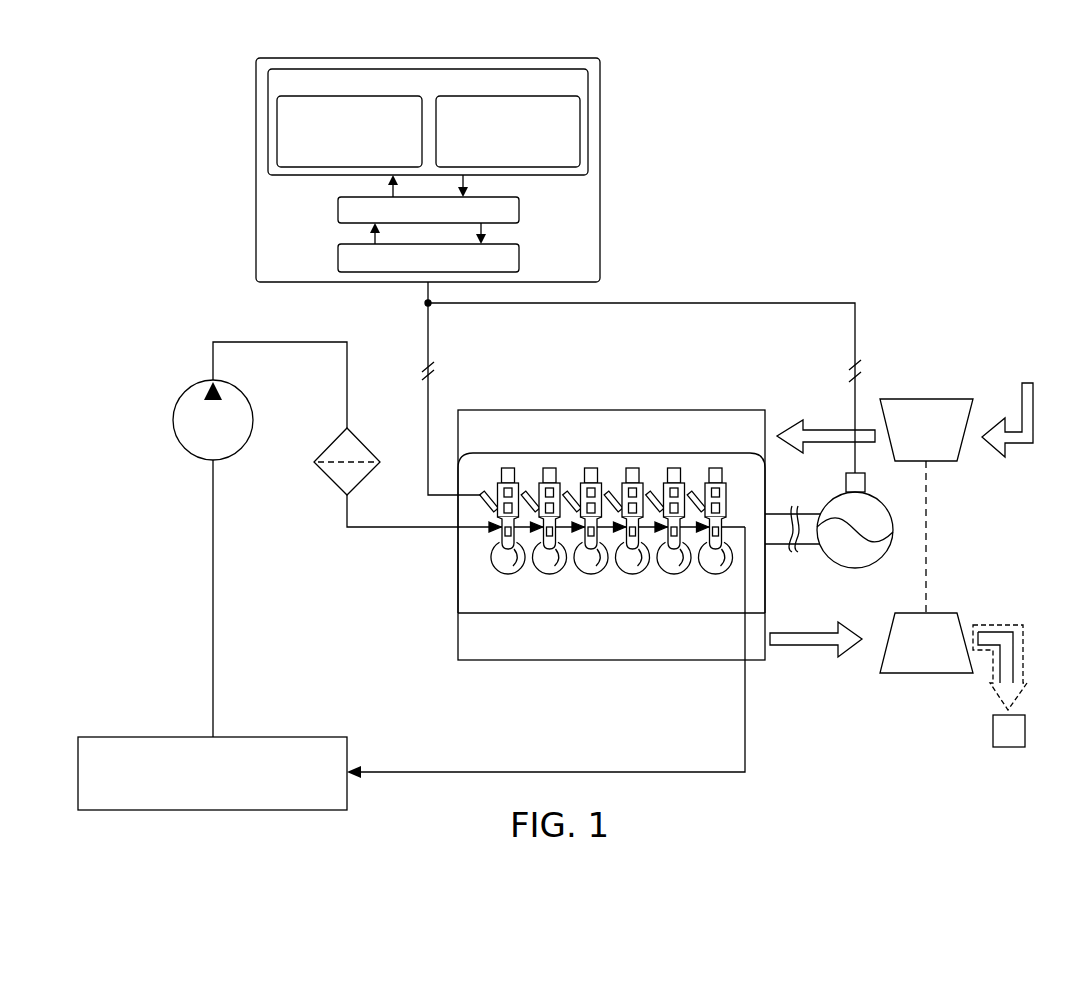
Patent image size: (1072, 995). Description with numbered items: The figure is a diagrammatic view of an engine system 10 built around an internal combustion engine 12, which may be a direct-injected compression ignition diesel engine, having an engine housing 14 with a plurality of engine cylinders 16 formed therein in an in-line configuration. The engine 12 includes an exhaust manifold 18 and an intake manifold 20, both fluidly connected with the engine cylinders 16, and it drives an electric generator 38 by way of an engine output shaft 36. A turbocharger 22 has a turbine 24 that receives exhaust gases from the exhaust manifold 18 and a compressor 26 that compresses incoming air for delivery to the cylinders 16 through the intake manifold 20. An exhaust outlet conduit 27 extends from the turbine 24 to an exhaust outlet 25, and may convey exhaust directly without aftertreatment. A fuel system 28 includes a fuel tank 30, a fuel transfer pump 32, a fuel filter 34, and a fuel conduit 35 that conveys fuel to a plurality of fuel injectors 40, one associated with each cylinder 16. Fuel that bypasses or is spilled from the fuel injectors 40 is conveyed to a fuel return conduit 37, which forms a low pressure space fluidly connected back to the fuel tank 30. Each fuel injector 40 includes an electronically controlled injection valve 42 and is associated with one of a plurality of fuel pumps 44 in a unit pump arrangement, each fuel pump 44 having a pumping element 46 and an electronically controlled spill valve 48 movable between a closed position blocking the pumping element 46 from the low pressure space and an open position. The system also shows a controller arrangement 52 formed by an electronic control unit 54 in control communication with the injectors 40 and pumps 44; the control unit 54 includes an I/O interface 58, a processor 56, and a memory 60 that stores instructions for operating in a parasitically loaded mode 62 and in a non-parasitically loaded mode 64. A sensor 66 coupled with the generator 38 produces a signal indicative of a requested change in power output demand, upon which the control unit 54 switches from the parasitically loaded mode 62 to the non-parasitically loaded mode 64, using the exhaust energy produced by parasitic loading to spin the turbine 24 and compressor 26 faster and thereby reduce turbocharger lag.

The engine system 10 is at (100, 321).
The internal combustion engine 12 is at (435, 611).
The engine housing 14 is at (458, 575).
The engine cylinders 16 is at (492, 560).
The exhaust manifold 18 is at (608, 660).
The intake manifold 20 is at (603, 410).
The turbocharger 22 is at (872, 699).
The turbine 24 is at (925, 673).
The exhaust outlet 25 is at (1025, 722).
The compressor 26 is at (928, 399).
The exhaust outlet conduit 27 is at (1027, 652).
The fuel system 28 is at (154, 609).
The fuel tank 30 is at (104, 737).
The fuel transfer pump 32 is at (180, 396).
The fuel filter 34 is at (330, 445).
The fuel conduit 35 is at (365, 528).
The engine output shaft 36 is at (782, 546).
The fuel return conduit 37 is at (533, 772).
The electric generator 38 is at (880, 564).
The fuel injectors 40 is at (681, 568).
The electronically controlled injection valve 42 is at (497, 530).
The fuel pumps 44 is at (702, 486).
The pumping element 46 is at (496, 495).
The spill valve 48 is at (495, 507).
The controller 52 is at (222, 242).
The electronic control unit 54 is at (600, 203).
The processor 56 is at (519, 203).
The I/O interface 58 is at (519, 251).
The memory 60 is at (588, 82).
The parasitically loaded mode 62 is at (277, 117).
The non-parasitically loaded mode 64 is at (580, 117).
The sensor 66 is at (846, 480).